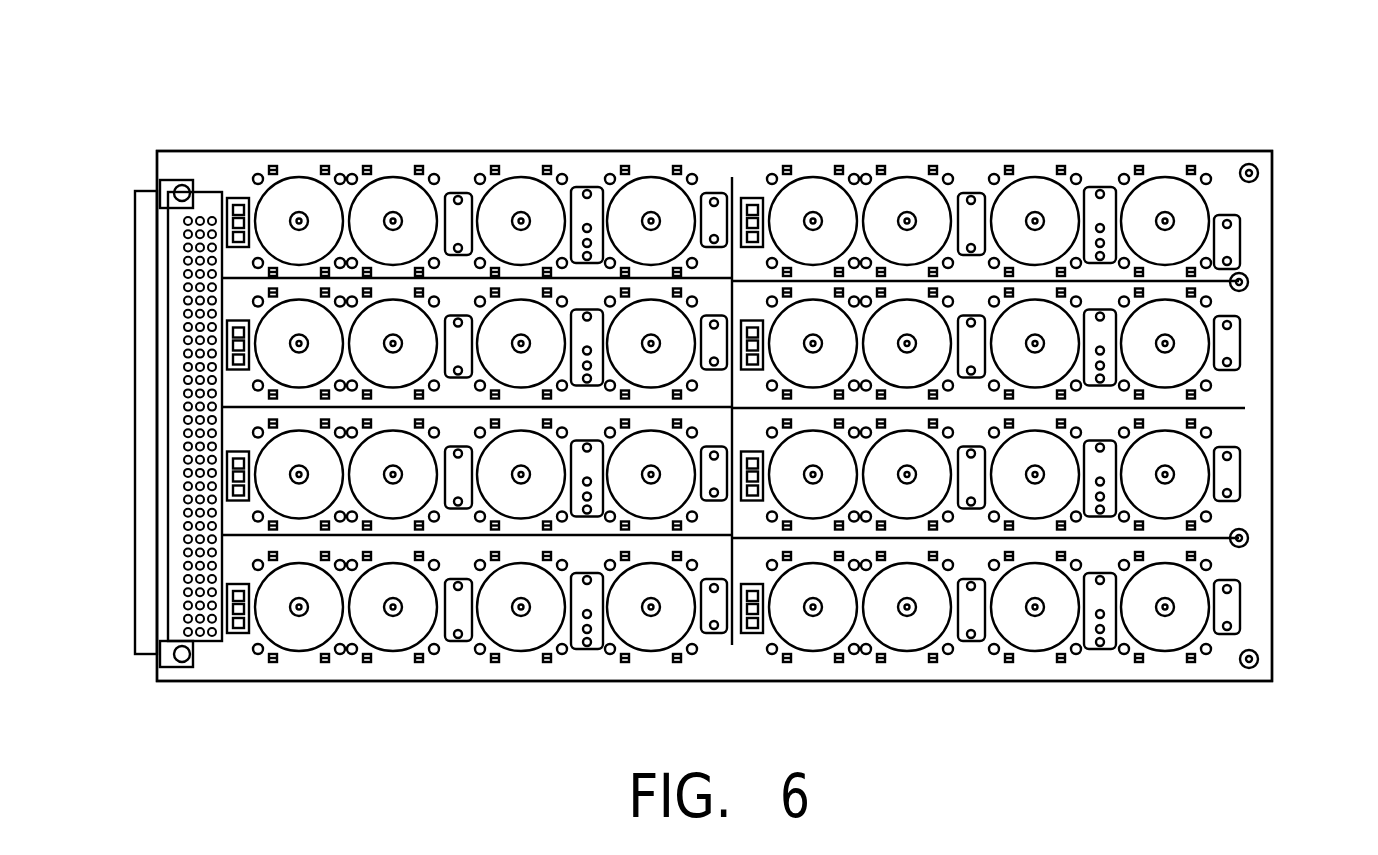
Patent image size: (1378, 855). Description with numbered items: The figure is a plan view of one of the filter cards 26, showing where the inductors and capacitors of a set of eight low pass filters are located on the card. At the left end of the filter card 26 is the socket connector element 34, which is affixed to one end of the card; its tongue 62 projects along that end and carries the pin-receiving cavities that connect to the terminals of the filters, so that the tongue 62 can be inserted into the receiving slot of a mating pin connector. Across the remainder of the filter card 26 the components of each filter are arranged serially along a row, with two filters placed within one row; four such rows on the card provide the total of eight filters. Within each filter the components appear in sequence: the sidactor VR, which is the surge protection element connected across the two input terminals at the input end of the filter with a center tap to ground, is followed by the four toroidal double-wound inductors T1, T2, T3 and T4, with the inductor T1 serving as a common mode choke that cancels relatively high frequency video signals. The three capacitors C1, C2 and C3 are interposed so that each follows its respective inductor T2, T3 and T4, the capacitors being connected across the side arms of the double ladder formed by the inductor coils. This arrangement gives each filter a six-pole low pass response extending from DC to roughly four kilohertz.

The tongue 62 is at (146, 191).
The socket connector element 34 is at (200, 192).
The sidactor VR is at (245, 198).
The inductor T1 is at (301, 177).
The inductor T2 is at (395, 177).
The capacitor C1 is at (458, 196).
The inductor T3 is at (523, 177).
The capacitor C2 is at (587, 187).
The inductor T4 is at (653, 177).
The capacitor C3 is at (713, 195).
The filter card 26 is at (1272, 364).